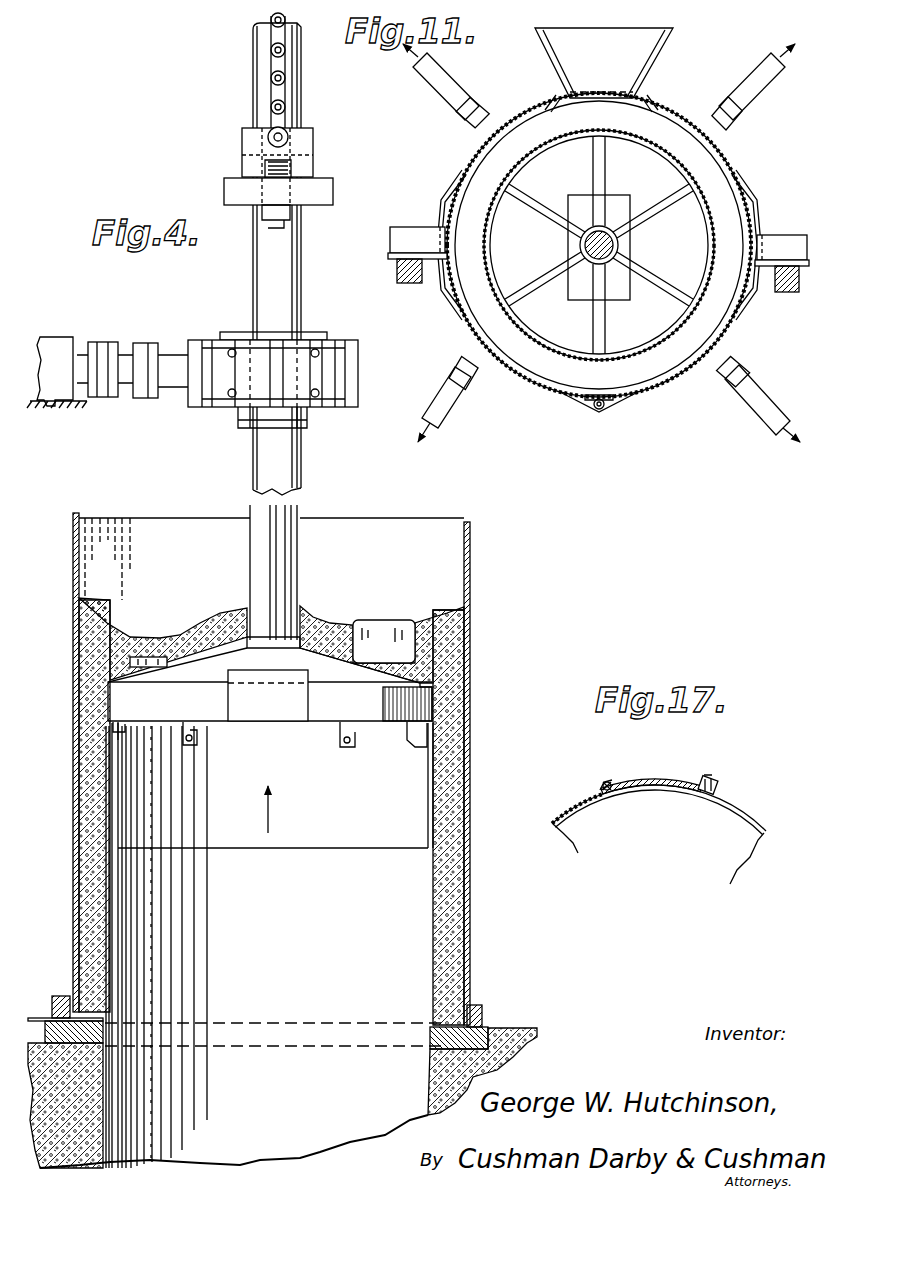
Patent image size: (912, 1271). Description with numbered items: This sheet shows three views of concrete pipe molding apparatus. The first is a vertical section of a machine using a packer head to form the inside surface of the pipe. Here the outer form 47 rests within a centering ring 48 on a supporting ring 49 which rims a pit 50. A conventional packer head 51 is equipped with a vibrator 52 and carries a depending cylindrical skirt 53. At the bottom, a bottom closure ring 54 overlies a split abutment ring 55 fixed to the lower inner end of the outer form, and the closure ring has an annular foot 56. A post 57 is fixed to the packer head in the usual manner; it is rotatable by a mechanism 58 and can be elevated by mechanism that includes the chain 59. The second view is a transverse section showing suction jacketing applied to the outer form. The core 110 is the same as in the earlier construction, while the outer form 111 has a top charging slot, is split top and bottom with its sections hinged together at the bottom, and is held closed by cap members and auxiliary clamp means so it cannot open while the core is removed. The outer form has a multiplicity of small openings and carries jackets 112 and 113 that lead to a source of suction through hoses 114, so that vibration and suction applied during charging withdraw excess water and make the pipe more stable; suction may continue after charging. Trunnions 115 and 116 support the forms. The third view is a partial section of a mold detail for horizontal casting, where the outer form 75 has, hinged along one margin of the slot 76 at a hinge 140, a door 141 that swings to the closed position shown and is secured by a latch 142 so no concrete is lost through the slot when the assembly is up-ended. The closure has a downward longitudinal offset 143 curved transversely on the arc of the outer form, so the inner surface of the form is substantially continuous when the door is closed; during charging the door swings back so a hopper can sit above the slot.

In FIG. 4, the outer form 47 is at (471, 760).
In FIG. 4, the centering ring 48 is at (473, 1007).
In FIG. 4, the supporting ring 49 is at (466, 1040).
In FIG. 4, the pit 50 is at (70, 1070).
In FIG. 4, the packer head 51 is at (300, 667).
In FIG. 4, the vibrator 52 is at (293, 712).
In FIG. 4, the depending cylindrical skirt 53 is at (428, 808).
In FIG. 4, the bottom closure ring 54 is at (433, 1005).
In FIG. 4, the split abutment ring 55 is at (75, 996).
In FIG. 4, the annular foot 56 is at (433, 1032).
In FIG. 4, the post 57 is at (293, 463).
In FIG. 4, the mechanism 58 is at (178, 395).
In FIG. 4, the chain 59 is at (258, 94).
In FIG. 11, the core 110 is at (634, 140).
In FIG. 11, the outer form 111 is at (724, 156).
In FIG. 11, the jacket 112 is at (745, 345).
In FIG. 11, the jacket 113 is at (758, 176).
In FIG. 11, the hoses 114 is at (442, 80).
In FIG. 11, the trunnion 115 is at (410, 225).
In FIG. 11, the trunnion 116 is at (785, 235).
In FIG. 17, the hinge 140 is at (605, 783).
In FIG. 17, the door 141 is at (632, 769).
In FIG. 17, the latch 142 is at (718, 780).
In FIG. 17, the downward longitudinal offset 143 is at (658, 786).
In FIG. 17, the outer form 75 is at (742, 814).
In FIG. 17, the slot 76 is at (692, 794).